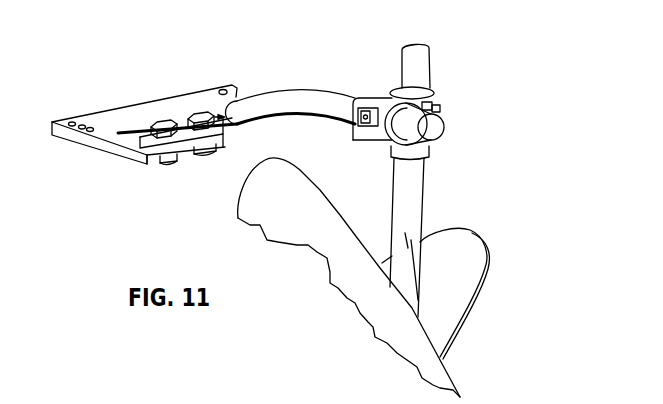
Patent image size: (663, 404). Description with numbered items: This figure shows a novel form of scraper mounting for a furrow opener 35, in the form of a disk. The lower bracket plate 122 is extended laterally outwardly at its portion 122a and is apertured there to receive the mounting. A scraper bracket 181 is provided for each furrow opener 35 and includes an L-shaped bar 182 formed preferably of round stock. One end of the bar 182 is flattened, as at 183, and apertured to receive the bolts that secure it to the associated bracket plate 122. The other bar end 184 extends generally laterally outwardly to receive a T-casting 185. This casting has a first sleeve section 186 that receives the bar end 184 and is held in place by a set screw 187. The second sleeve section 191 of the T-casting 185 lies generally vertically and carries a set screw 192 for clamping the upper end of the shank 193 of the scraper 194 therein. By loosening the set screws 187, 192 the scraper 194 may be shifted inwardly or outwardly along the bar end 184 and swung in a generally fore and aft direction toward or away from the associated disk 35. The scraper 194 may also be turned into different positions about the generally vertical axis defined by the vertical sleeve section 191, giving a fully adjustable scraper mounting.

The lower bracket plate 122 is at (93, 110).
The laterally outwardly extended portion of lower bracket plate 122a is at (143, 149).
The flattened end of L-shaped bar 183 is at (187, 139).
The L-shaped bar 182 is at (300, 89).
The first sleeve section 186 is at (381, 99).
The set screw 187 is at (354, 108).
The T-casting 185 is at (364, 149).
The scraper bracket 181 is at (455, 98).
The bar end 184 is at (441, 128).
The set screw 192 is at (442, 110).
The second sleeve section 191 is at (422, 99).
The shank 193 is at (424, 53).
The scraper 194 is at (444, 242).
The furrow opener 35 is at (342, 277).